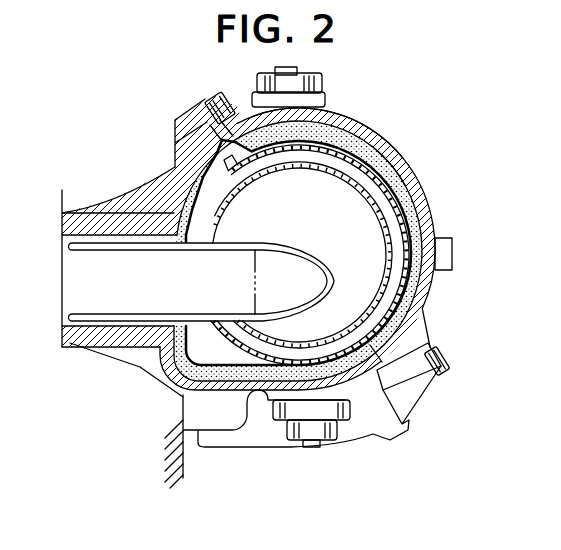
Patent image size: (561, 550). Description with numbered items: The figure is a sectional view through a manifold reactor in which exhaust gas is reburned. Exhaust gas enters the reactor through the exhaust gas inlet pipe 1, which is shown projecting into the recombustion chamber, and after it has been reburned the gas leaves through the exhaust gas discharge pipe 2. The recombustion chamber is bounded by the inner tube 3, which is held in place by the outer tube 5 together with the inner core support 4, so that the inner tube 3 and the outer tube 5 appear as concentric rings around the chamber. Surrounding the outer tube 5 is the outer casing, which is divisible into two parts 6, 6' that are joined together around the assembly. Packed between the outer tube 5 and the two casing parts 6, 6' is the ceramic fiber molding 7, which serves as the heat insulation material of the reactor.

The exhaust gas inlet pipe 1 is at (97, 253).
The exhaust gas discharge pipe 2 is at (380, 437).
The inner tube 3 is at (395, 220).
The inner core support 4 is at (372, 143).
The outer tube 5 is at (435, 302).
The outer casing part 6 is at (345, 126).
The outer casing part 6' is at (178, 129).
The ceramic fiber molding 7 is at (410, 173).